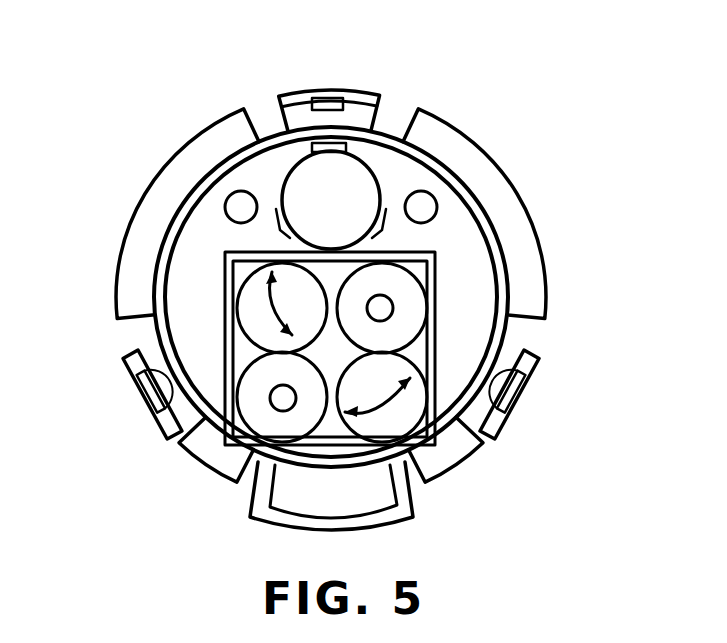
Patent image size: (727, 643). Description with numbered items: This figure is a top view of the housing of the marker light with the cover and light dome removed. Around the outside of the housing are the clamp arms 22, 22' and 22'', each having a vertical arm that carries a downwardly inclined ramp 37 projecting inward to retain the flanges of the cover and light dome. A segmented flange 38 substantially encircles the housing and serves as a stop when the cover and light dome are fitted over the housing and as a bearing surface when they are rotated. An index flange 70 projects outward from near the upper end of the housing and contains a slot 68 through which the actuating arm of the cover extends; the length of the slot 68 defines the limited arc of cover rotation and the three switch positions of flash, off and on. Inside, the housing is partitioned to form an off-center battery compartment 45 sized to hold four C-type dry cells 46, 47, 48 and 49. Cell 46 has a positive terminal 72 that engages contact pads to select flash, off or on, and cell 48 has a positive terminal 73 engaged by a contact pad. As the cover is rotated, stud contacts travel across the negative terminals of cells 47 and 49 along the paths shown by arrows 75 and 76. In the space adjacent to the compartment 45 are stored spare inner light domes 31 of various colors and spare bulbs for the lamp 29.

The clamp arm 22' is at (313, 76).
The clamp arm 22'' is at (106, 390).
The clamp arm 22 is at (539, 418).
The ramp 37 is at (333, 110).
The inner light dome 31 is at (350, 150).
The lamp 29 is at (232, 197).
The segmented flange 38 is at (130, 207).
The dry cell 46 is at (240, 478).
The dry cell 48 is at (437, 263).
The battery compartment 45 is at (438, 335).
The dry cell 49 is at (240, 292).
The arrow 76 is at (258, 308).
The positive terminal 73 is at (393, 307).
The positive terminal 72 is at (296, 412).
The dry cell 47 is at (355, 428).
The arrow 75 is at (383, 410).
The index flange 70 is at (405, 478).
The slot 68 is at (318, 497).